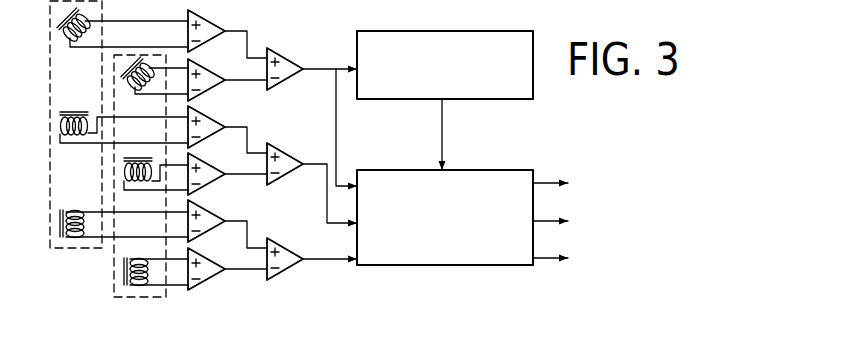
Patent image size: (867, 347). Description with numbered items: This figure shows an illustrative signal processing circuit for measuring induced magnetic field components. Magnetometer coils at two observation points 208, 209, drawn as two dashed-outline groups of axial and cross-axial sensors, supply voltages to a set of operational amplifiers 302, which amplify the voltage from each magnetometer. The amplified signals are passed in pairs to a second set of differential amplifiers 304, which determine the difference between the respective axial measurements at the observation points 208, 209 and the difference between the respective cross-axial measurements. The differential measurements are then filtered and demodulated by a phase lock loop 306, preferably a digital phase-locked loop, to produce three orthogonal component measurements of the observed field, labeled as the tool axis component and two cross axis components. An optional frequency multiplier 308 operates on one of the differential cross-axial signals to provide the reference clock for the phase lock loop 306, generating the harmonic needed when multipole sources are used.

The observation point 209 is at (82, 249).
The observation point 208 is at (153, 297).
The set of operational amplifiers 302 is at (232, 297).
The second set of differential amplifiers 304 is at (310, 297).
The frequency multiplier 308 is at (410, 101).
The phase lock loop 306 is at (410, 265).